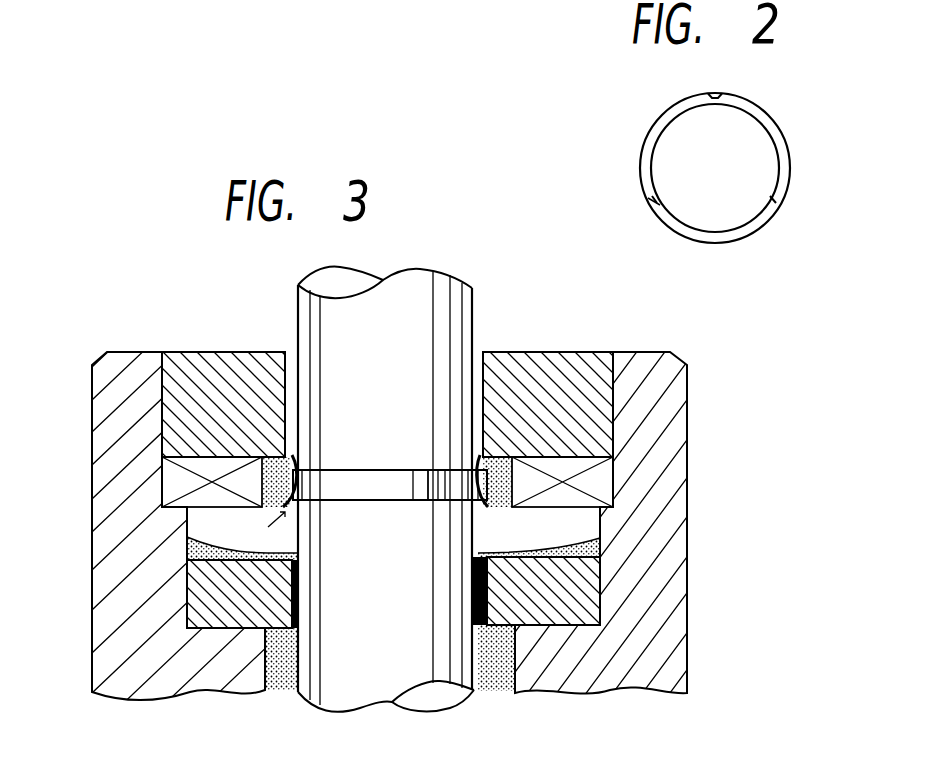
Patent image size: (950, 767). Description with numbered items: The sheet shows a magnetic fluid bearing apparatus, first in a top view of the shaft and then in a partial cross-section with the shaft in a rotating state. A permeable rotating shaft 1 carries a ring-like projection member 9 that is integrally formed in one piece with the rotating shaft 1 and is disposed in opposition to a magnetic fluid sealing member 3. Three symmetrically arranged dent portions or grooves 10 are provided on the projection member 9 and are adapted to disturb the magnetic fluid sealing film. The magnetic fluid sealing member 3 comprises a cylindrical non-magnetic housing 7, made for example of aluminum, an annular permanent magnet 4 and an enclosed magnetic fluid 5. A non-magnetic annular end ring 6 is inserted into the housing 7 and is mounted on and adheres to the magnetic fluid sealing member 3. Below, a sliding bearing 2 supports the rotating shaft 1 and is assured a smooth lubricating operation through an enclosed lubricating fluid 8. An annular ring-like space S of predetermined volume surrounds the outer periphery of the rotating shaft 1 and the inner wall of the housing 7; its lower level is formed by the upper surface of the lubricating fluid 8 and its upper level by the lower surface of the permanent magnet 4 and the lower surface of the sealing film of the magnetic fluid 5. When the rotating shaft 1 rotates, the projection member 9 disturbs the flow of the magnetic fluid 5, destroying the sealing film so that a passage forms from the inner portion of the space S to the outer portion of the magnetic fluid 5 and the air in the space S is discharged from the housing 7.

In FIG. 2, the permeable rotating shaft 1 is at (765, 172).
In FIG. 3, the permeable rotating shaft 1 is at (443, 320).
In FIG. 3, the sliding bearing 2 is at (205, 625).
In FIG. 3, the magnetic fluid sealing member 3 is at (195, 548).
In FIG. 3, the annular permanent magnet 4 is at (602, 472).
In FIG. 3, the enclosed magnetic fluid 5 is at (180, 500).
In FIG. 3, the annular end ring 6 is at (188, 357).
In FIG. 3, the cylindrical non-magnetic housing 7 is at (110, 462).
In FIG. 3, the enclosed lubricating fluid 8 is at (500, 690).
In FIG. 2, the projection member 9 is at (645, 140).
In FIG. 3, the projection member 9 is at (345, 482).
In FIG. 2, the dent portions or grooves 10 is at (652, 200).
In FIG. 3, the dent portions or grooves 10 is at (428, 480).
In FIG. 3, the annular ring-like shape space S is at (587, 525).